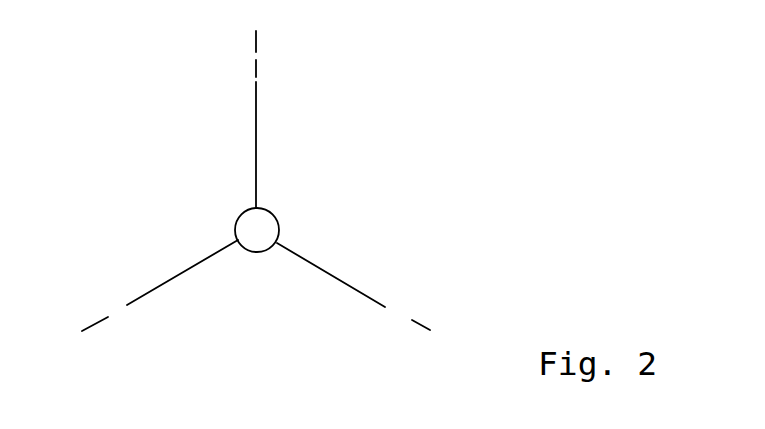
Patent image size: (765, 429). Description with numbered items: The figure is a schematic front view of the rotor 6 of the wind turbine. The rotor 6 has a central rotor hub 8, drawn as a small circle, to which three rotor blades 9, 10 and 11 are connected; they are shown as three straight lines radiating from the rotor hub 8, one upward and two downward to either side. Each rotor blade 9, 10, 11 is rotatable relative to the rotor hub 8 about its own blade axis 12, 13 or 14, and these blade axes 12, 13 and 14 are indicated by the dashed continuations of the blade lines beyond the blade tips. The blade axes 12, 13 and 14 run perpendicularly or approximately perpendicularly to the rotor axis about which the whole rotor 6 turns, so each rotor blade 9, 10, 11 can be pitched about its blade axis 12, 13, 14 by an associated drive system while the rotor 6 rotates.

The rotor 6 is at (405, 100).
The rotor hub 8 is at (272, 228).
The rotor blade 9 is at (256, 130).
The rotor blade 10 is at (332, 277).
The rotor blade 11 is at (168, 281).
The blade axis 12 is at (256, 62).
The blade axis 13 is at (402, 313).
The blade axis 14 is at (113, 313).